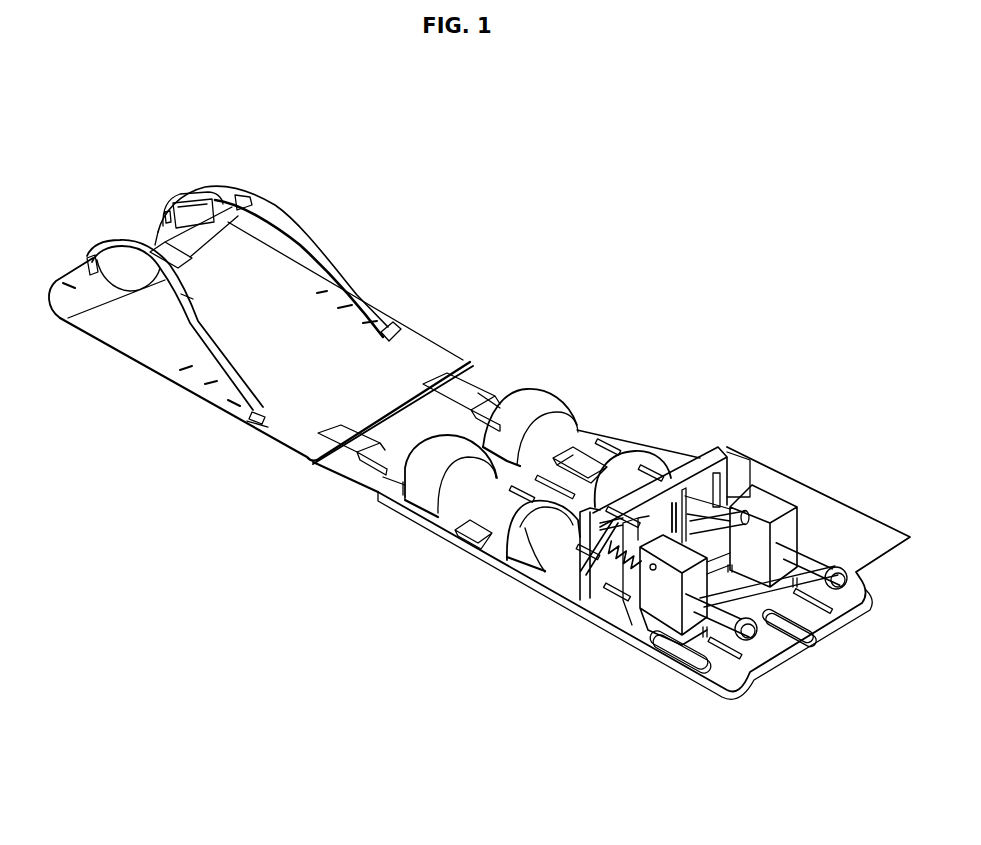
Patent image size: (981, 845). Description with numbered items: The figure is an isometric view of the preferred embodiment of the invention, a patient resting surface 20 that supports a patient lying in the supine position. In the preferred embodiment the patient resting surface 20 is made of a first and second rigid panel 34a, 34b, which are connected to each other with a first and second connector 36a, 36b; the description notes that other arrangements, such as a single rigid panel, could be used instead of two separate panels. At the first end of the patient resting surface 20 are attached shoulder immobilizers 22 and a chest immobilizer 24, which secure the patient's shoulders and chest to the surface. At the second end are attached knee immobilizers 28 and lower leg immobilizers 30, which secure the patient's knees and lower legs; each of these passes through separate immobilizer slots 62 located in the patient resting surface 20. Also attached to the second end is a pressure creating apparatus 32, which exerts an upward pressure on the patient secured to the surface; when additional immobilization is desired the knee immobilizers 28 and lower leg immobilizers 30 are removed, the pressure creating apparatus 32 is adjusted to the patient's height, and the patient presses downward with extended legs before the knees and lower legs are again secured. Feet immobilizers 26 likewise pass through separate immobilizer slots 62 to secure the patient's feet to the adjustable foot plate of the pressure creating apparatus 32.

The patient resting surface 20 is at (374, 457).
The shoulder immobilizers 22 is at (190, 278).
The chest immobilizer 24 is at (203, 224).
The feet immobilizers 26 is at (565, 533).
The knee immobilizers 28 is at (533, 407).
The lower leg immobilizers 30 is at (642, 459).
The pressure creating apparatus 32 is at (818, 483).
The first rigid panel 34a is at (317, 351).
The second rigid panel 34b is at (457, 497).
The first connector 36a is at (463, 389).
The second connector 36b is at (348, 446).
The immobilizer slots 62 is at (607, 447).